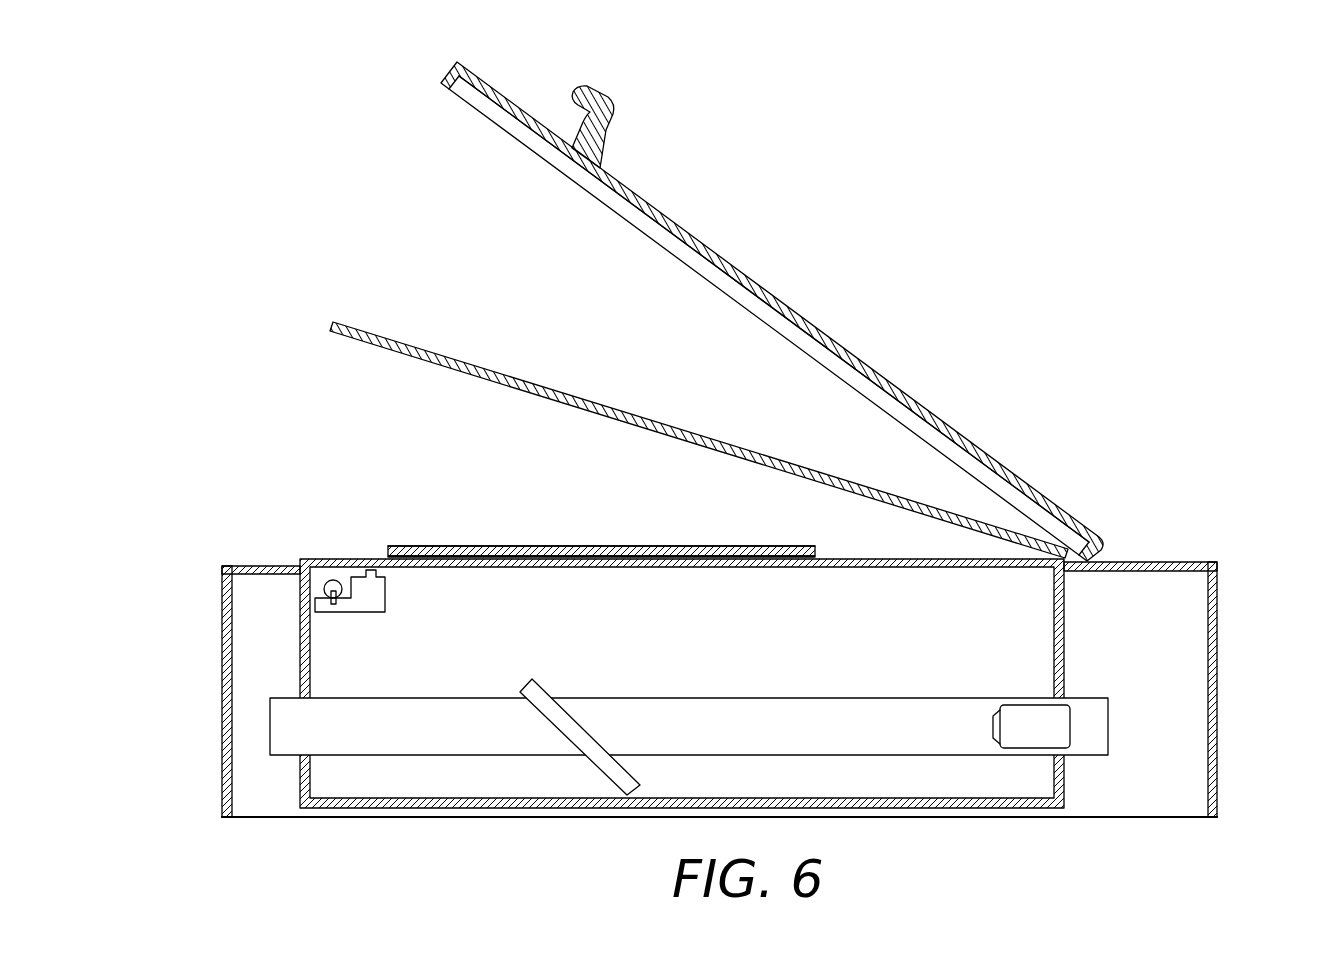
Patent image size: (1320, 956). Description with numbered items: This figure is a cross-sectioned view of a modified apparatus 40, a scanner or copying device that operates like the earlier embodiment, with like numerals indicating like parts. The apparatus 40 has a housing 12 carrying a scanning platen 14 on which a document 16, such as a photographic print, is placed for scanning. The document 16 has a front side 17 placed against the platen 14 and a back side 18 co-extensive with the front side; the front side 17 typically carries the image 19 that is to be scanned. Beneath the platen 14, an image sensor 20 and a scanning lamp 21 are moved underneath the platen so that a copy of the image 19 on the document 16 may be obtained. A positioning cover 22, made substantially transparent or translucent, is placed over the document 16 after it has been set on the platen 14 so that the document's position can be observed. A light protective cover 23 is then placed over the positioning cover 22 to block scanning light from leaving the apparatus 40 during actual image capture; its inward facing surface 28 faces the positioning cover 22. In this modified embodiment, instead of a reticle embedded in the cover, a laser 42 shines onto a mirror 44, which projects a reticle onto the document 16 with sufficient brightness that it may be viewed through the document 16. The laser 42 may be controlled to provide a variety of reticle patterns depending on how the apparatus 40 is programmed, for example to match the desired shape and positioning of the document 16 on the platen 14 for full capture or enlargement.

The housing 12 is at (1220, 678).
The scanning platen 14 is at (844, 559).
The document 16 is at (559, 538).
The front side 17 is at (487, 556).
The back side 18 is at (487, 546).
The image 19 is at (608, 560).
The image sensor 20 is at (378, 575).
The scanning lamp 21 is at (332, 580).
The positioning cover 22 is at (485, 369).
The light protective cover 23 is at (770, 285).
The inward facing surface 28 is at (781, 306).
The modified apparatus 40 is at (240, 438).
The laser 42 is at (1043, 714).
The mirror 44 is at (534, 680).